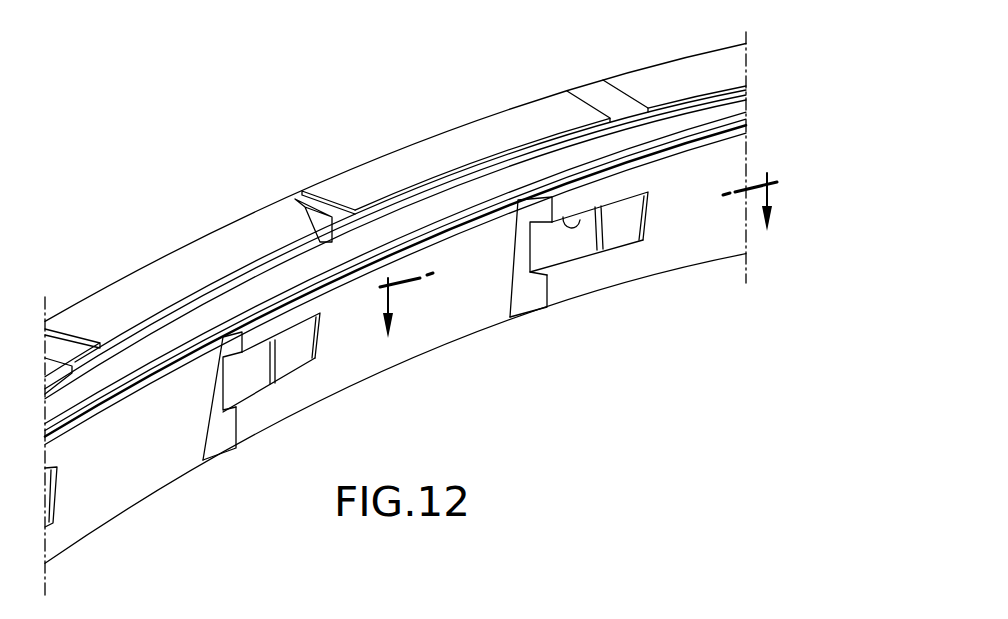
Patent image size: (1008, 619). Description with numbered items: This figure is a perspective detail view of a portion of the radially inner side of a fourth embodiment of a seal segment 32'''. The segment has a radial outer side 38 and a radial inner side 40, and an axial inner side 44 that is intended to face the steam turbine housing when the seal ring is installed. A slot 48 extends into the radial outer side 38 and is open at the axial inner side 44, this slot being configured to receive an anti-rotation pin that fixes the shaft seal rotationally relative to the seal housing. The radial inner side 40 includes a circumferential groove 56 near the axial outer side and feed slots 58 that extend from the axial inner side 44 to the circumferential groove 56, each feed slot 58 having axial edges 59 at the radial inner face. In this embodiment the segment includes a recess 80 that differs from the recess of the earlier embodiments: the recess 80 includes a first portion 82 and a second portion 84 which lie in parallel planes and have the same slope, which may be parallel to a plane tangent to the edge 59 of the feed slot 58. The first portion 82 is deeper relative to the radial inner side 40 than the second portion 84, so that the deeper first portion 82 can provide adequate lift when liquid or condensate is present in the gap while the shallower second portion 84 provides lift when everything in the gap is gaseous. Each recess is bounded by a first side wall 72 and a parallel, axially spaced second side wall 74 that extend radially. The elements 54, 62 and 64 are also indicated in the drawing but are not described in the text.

The seal segment 32''' is at (435, 298).
The radial outer side 38 is at (122, 277).
The radial inner side 40 is at (713, 238).
The axial inner side 44 is at (388, 165).
The slot 48 is at (305, 217).
The plate 54 is at (688, 122).
The circumferential groove 56 is at (580, 177).
The feed slot 58 is at (224, 350).
The axial edge 59 is at (257, 345).
The tab 62 is at (520, 257).
The window 64 is at (650, 218).
The first side wall 72 is at (560, 260).
The second side wall 74 is at (567, 228).
The recess 80 is at (222, 430).
The first portion 82 is at (245, 380).
The second portion 84 is at (300, 360).